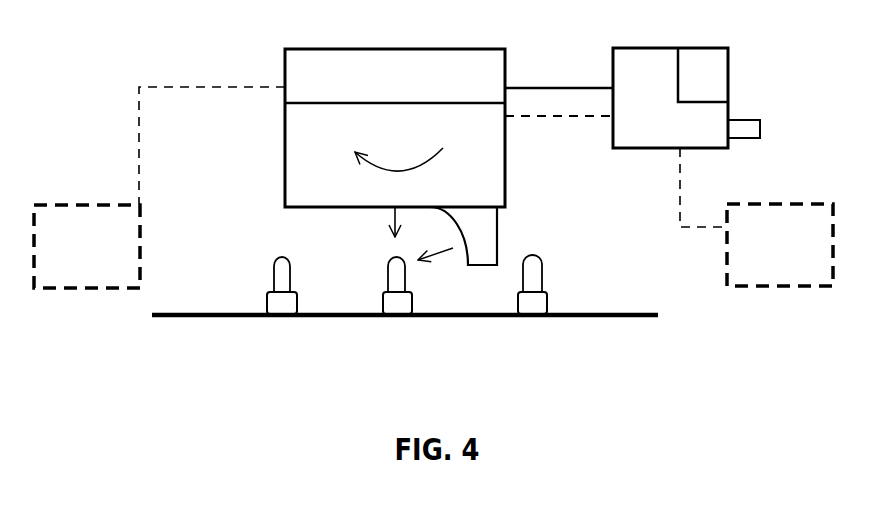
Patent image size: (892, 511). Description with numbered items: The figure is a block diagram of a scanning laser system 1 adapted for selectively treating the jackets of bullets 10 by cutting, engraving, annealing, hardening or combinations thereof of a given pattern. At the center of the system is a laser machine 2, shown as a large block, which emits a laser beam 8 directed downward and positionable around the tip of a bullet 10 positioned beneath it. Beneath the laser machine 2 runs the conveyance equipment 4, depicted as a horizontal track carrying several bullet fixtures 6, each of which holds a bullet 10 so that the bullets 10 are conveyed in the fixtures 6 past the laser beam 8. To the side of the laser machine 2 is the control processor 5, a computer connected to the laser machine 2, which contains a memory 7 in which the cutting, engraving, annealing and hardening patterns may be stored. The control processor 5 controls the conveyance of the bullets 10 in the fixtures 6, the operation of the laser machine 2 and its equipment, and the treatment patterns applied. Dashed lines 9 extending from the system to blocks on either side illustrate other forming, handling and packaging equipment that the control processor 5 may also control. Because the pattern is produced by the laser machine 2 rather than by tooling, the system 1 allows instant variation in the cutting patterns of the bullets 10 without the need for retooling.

The scanning laser system 1 is at (275, 58).
The laser machine 2 is at (395, 128).
The conveyance equipment 4 is at (205, 318).
The control processor 5 is at (632, 98).
The bullet fixtures 6 is at (413, 307).
The memory 7 is at (703, 75).
The laser beam 8 is at (378, 230).
The dashed lines 9 is at (433, 246).
The bullets 10 is at (283, 260).